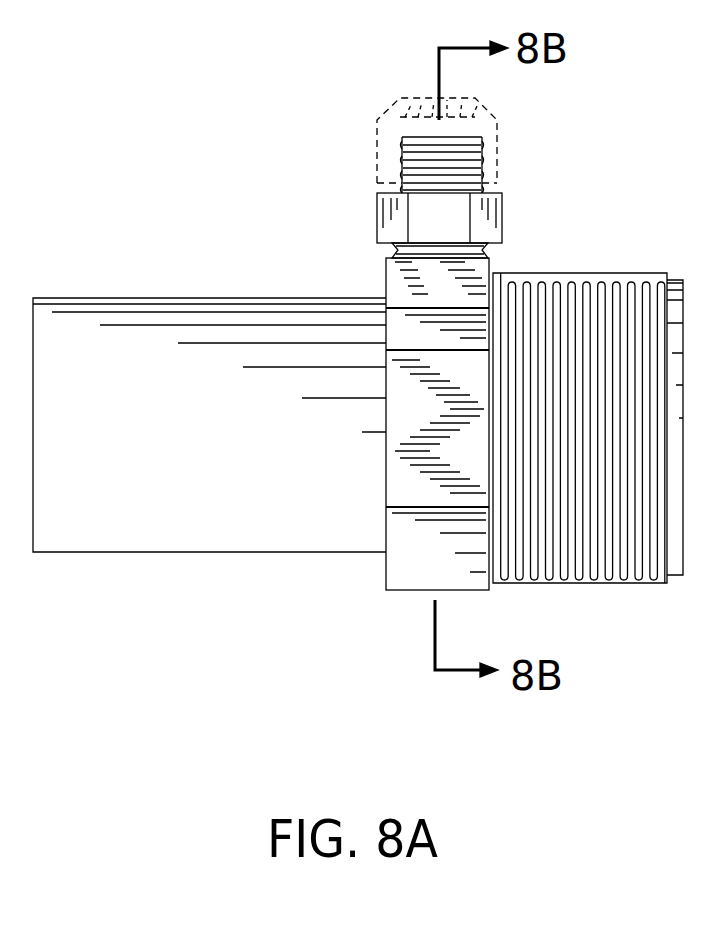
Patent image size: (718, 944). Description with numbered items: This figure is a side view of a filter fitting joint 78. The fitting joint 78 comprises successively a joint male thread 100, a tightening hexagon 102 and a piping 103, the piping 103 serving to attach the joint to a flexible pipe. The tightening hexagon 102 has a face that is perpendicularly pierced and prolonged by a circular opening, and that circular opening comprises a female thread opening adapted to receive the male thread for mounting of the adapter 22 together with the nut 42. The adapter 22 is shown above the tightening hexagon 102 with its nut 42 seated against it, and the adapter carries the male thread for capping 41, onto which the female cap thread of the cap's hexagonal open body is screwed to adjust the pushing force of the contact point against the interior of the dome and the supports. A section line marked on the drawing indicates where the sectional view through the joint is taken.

The adapter 22 is at (358, 148).
The male thread for capping 41 is at (479, 170).
The nut 42 is at (503, 222).
The fitting joint 78 is at (105, 574).
The joint male thread 100 is at (618, 562).
The tightening hexagon 102 is at (410, 558).
The piping 103 is at (223, 528).